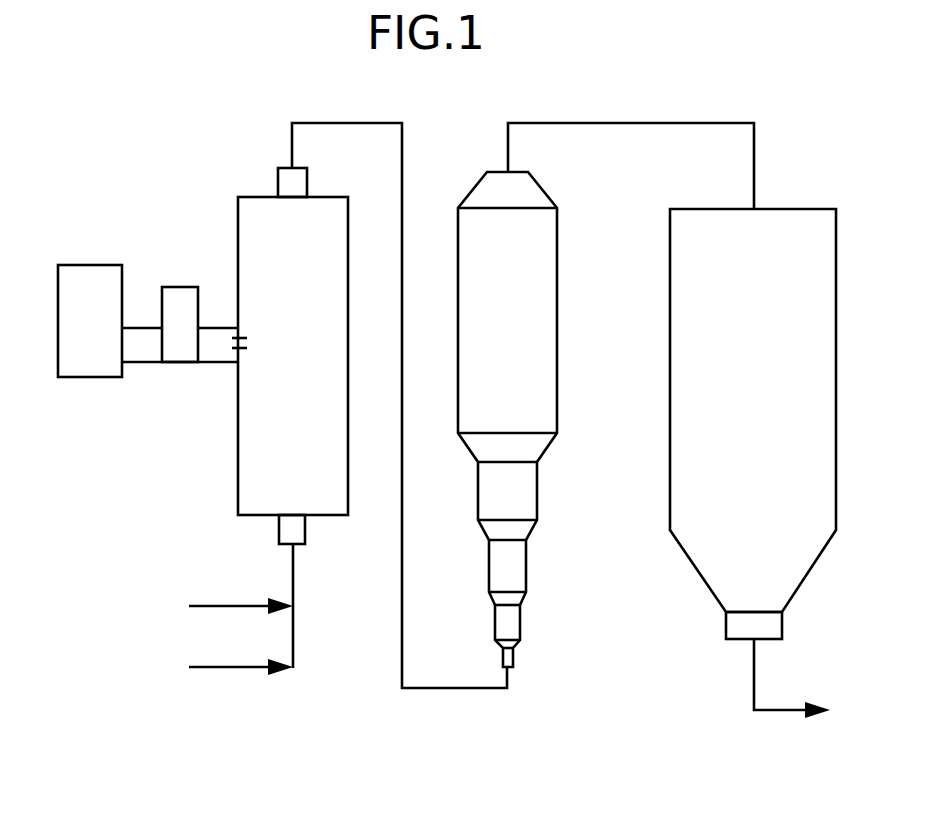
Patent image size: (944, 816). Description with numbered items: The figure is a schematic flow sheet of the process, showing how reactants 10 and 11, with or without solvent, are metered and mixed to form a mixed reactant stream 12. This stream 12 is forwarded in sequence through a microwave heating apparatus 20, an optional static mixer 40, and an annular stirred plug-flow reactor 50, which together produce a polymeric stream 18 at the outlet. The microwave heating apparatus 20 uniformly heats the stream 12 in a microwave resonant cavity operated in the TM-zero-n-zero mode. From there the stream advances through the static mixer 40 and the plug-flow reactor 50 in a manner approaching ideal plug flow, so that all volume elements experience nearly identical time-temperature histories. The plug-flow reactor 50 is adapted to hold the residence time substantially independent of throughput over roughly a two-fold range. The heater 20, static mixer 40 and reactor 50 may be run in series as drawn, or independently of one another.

The reactant 10 is at (235, 602).
The reactant 11 is at (233, 663).
The mixed reactant stream 12 is at (296, 590).
The polymeric stream 18 is at (810, 682).
The microwave heating apparatus 20 is at (234, 411).
The static mixer 40 is at (575, 210).
The annular plug-flow reactor 50 is at (803, 198).